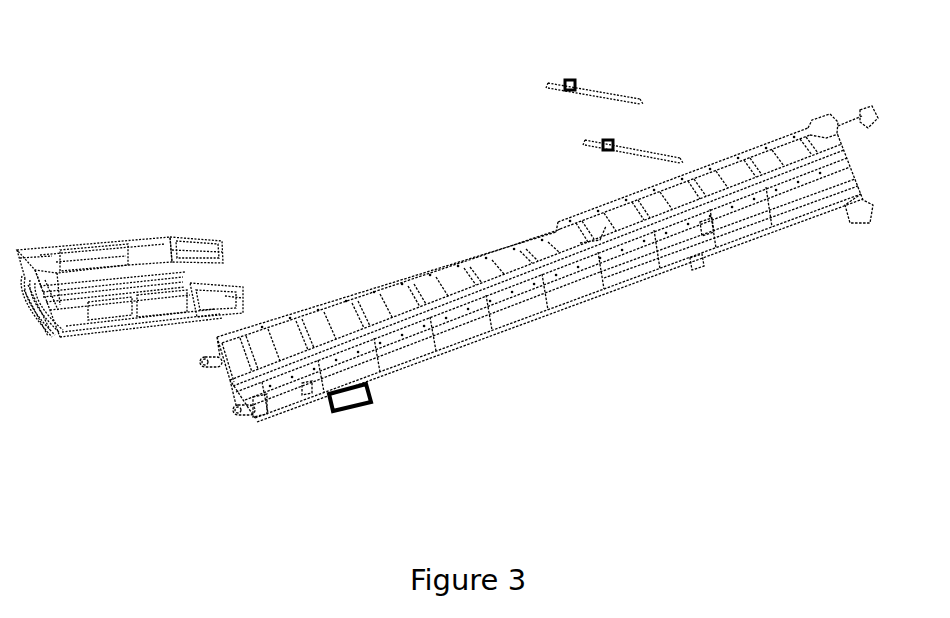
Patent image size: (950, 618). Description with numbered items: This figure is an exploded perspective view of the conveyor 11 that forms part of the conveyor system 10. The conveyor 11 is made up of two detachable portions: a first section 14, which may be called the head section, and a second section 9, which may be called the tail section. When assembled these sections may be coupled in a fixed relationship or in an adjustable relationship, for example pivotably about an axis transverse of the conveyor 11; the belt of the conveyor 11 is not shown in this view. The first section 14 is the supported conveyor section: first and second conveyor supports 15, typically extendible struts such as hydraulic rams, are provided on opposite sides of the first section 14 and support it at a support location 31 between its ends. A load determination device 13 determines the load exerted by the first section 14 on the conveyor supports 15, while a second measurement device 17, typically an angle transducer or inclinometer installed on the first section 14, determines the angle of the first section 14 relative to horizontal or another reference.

The conveyor system 10 is at (193, 87).
The second section 9 is at (118, 252).
The conveyor 11 is at (233, 380).
The load determination device 13 is at (603, 147).
The first section 14 is at (542, 322).
The conveyor supports 15 is at (645, 148).
The second measurement device 17 is at (358, 408).
The support location 31 is at (697, 267).